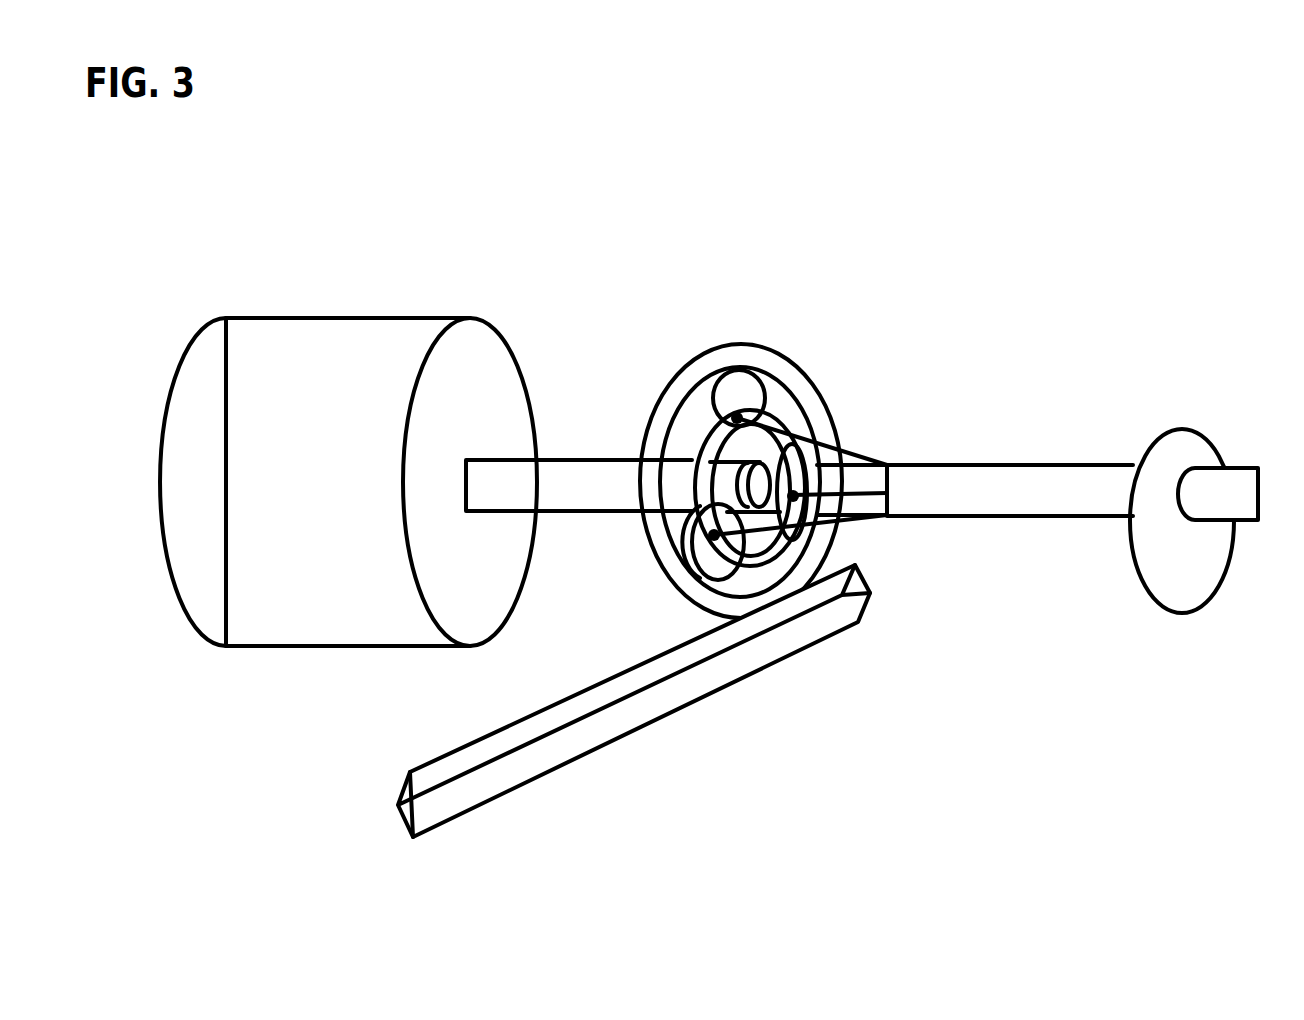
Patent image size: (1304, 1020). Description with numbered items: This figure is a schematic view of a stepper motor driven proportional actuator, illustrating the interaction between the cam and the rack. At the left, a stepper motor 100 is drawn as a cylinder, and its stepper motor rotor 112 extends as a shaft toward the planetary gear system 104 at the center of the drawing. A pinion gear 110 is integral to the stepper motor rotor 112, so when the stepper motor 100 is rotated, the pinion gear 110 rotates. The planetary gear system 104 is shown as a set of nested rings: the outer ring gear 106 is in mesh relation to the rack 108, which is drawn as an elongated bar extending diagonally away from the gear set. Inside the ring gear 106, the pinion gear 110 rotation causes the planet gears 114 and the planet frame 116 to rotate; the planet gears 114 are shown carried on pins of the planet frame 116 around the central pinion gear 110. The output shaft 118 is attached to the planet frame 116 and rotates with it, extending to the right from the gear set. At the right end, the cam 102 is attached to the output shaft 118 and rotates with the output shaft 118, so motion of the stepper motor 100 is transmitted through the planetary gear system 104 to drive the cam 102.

The stepper motor 100 is at (362, 318).
The cam 102 is at (1182, 613).
The planetary gear system 104 is at (815, 549).
The ring gear 106 is at (838, 422).
The rack 108 is at (733, 688).
The pinion gear 110 is at (760, 485).
The stepper motor rotor 112 is at (598, 462).
The planet gears 114 is at (740, 387).
The planet frame 116 is at (780, 420).
The output shaft 118 is at (1053, 465).